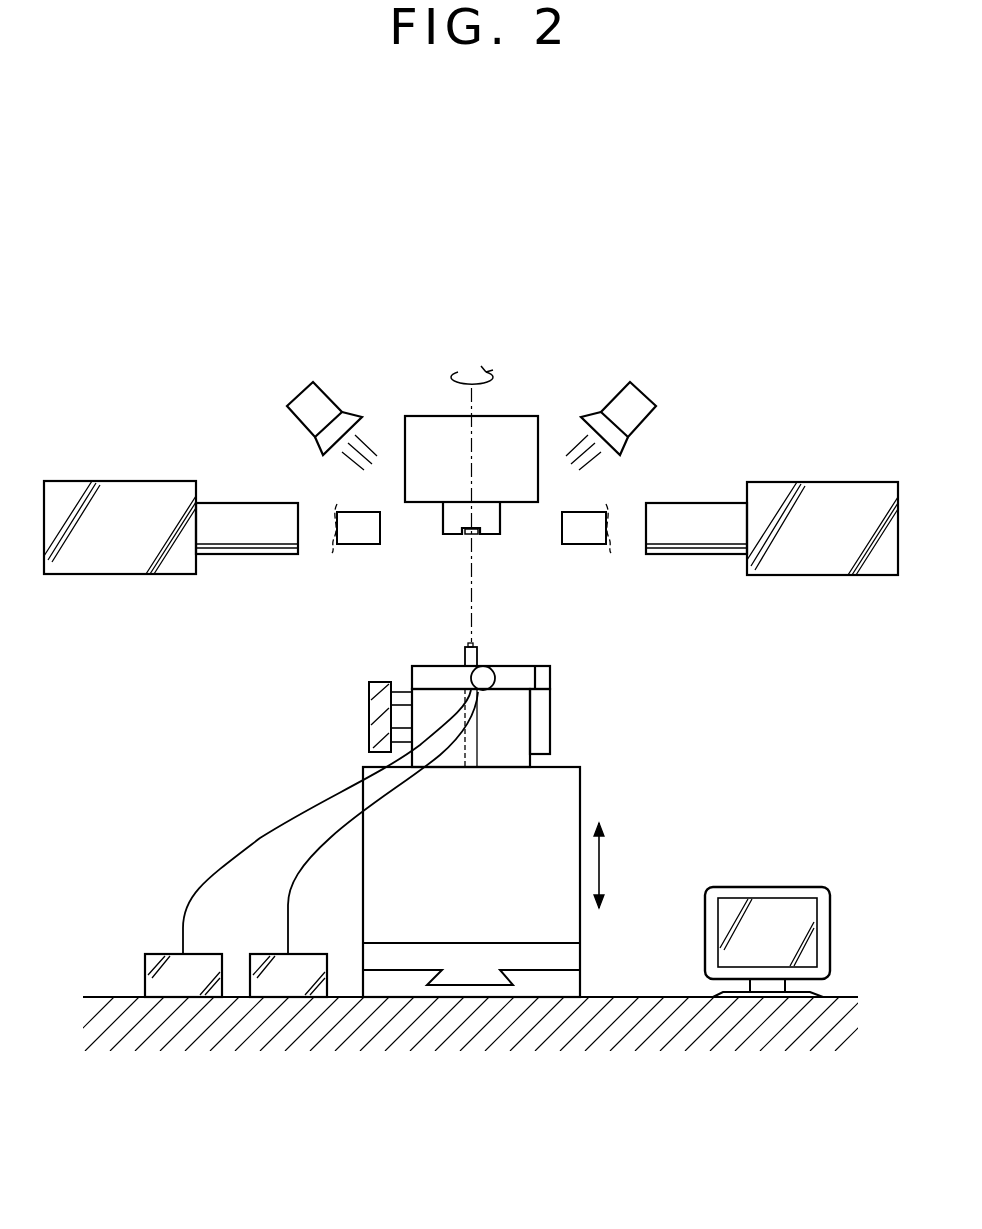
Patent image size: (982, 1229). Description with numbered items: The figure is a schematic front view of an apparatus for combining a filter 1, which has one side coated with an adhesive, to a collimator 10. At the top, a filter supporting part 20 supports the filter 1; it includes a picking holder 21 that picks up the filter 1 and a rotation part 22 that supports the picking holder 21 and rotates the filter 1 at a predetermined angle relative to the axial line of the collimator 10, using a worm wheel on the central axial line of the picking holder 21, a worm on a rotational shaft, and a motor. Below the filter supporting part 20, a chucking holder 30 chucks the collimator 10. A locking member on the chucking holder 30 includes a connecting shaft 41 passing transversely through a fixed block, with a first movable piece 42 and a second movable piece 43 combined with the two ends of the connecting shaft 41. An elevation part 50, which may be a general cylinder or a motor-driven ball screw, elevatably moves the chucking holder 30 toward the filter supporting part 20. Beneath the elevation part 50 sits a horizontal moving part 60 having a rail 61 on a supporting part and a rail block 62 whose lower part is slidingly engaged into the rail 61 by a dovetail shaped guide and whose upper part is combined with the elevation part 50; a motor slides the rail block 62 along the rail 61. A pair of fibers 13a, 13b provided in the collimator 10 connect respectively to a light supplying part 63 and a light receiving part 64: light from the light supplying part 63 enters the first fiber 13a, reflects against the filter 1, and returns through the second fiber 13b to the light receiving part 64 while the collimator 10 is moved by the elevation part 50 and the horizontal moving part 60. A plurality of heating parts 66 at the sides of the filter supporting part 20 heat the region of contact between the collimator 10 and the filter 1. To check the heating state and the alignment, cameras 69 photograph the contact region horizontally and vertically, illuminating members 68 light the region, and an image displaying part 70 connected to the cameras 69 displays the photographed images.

The filter 1 is at (466, 537).
The collimator 10 is at (487, 641).
The filter supporting part 20 is at (422, 305).
The picking holder 21 is at (482, 513).
The rotation part 22 is at (420, 423).
The chucking holder 30 is at (553, 684).
The connecting shaft 41 is at (400, 727).
The first movable piece 42 is at (549, 737).
The second movable piece 43 is at (369, 688).
The elevation part 50 is at (380, 830).
The horizontal moving part 60 is at (405, 1132).
The rail 61 is at (402, 987).
The rail block 62 is at (545, 955).
The light supplying part 63 is at (182, 983).
The light receiving part 64 is at (288, 983).
The heating part 66 is at (357, 536).
The illuminating member 68 is at (313, 385).
The camera 69 is at (255, 546).
The image displaying part 70 is at (826, 937).
The first fiber 13a is at (217, 877).
The second fiber 13b is at (295, 888).